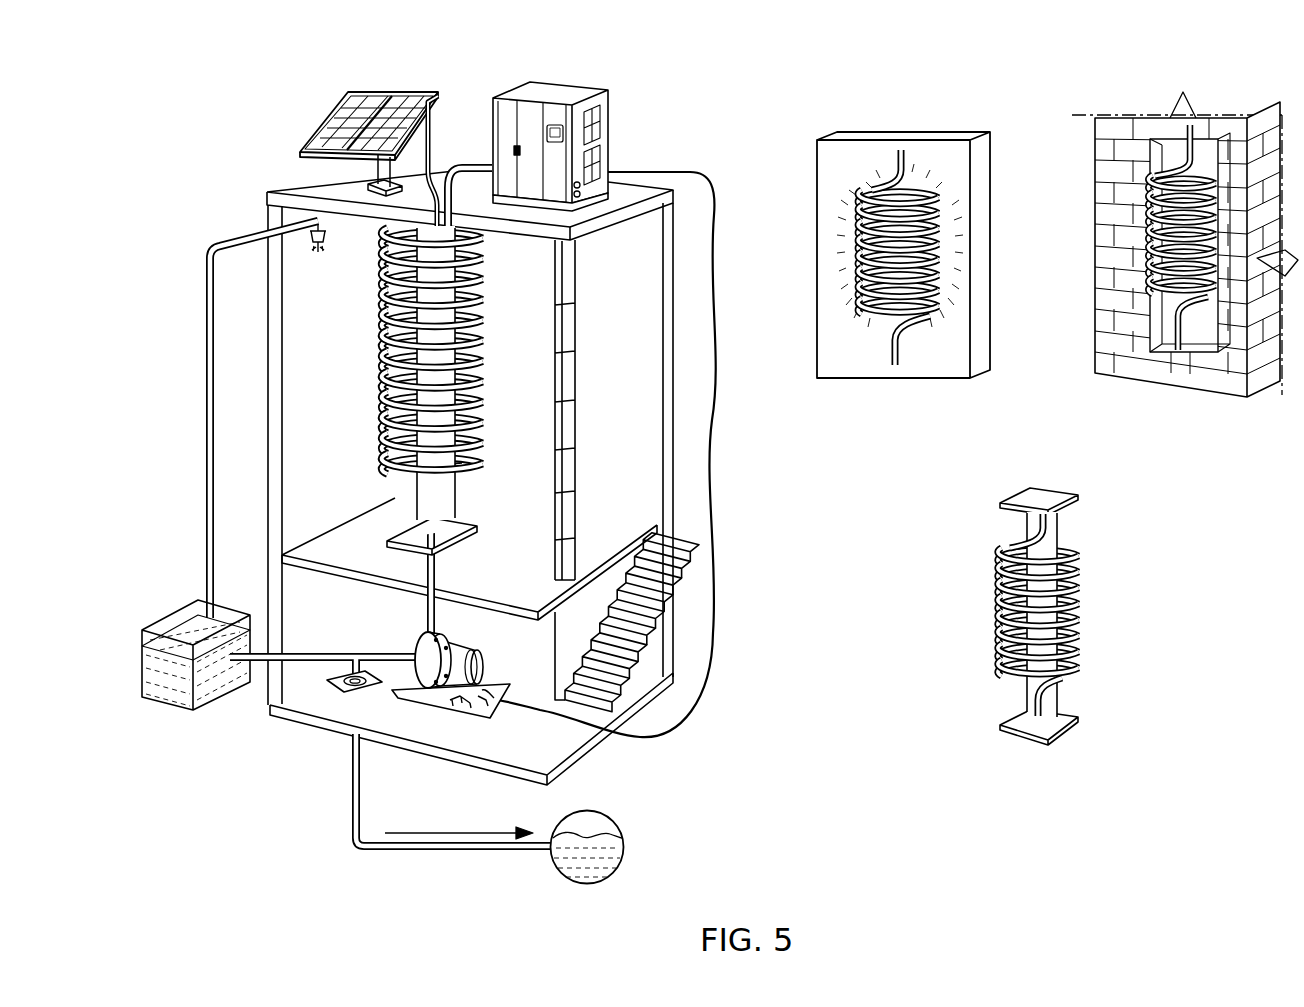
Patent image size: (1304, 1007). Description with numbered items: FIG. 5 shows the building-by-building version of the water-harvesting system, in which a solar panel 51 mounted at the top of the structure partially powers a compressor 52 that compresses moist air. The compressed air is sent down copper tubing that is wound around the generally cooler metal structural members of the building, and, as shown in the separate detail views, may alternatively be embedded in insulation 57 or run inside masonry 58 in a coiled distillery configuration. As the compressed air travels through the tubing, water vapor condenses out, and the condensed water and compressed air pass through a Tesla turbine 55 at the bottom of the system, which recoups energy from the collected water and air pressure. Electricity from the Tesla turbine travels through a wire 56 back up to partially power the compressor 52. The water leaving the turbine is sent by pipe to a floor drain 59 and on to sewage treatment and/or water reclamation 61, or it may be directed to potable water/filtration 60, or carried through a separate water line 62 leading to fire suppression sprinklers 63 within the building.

The solar panel 51 is at (370, 94).
The compressor 52 is at (612, 143).
The Tesla turbine 55 is at (425, 652).
The wire 56 is at (717, 545).
The insulation 57 is at (880, 226).
The masonry 58 is at (1169, 234).
The floor drain 59 is at (335, 693).
The potable water/filtration 60 is at (172, 607).
The sewage treatment and/or water reclamation 61 is at (350, 808).
The separate water line 62 is at (205, 430).
The fire suppression sprinklers 63 is at (305, 238).